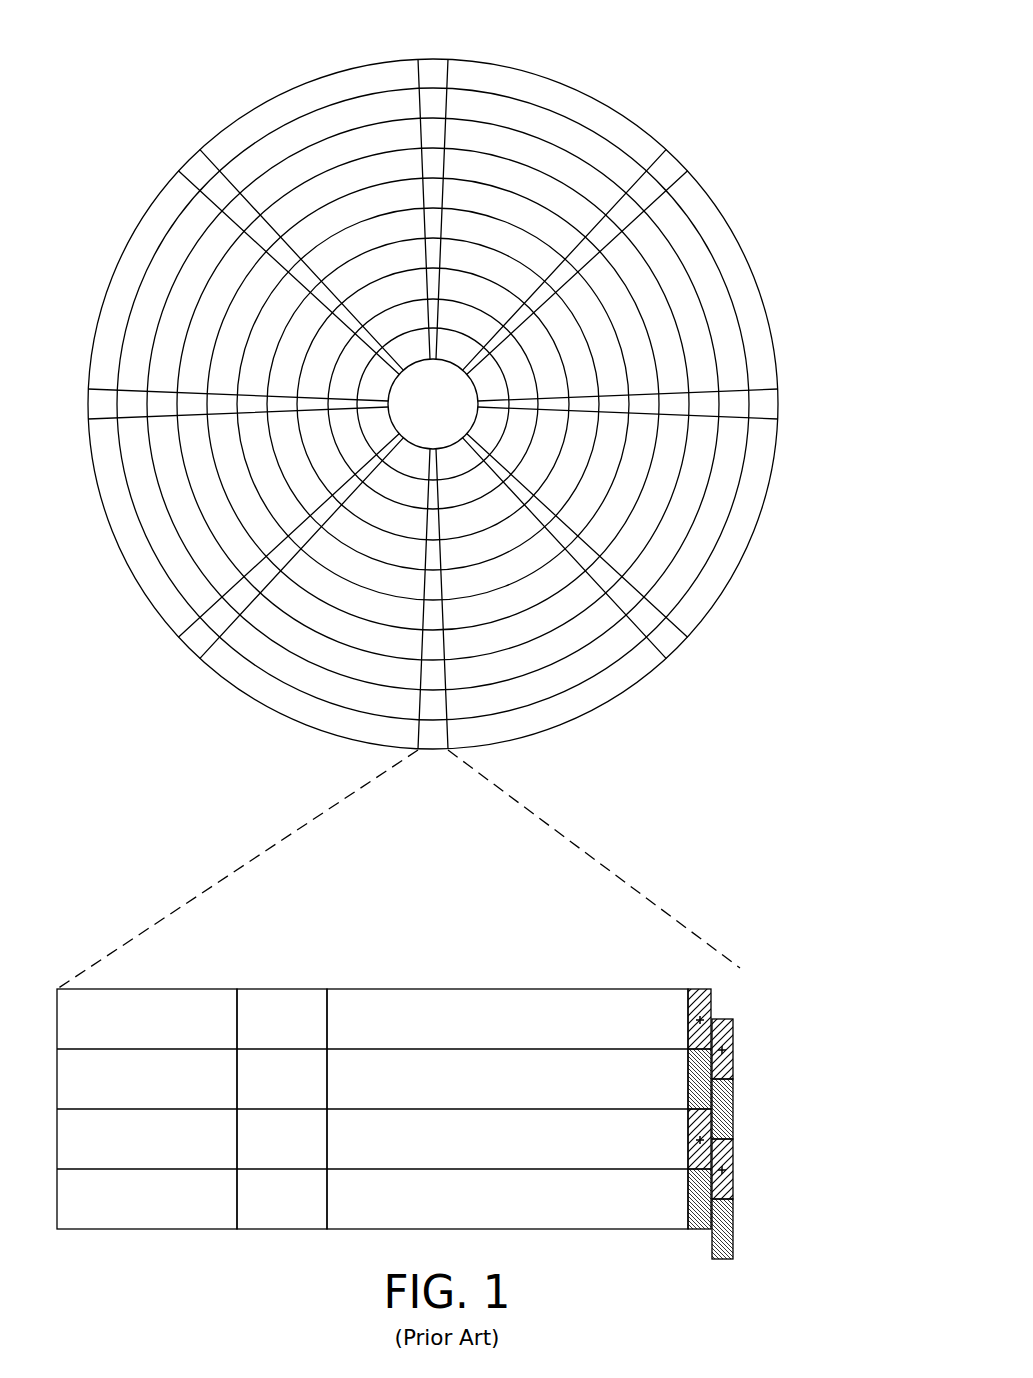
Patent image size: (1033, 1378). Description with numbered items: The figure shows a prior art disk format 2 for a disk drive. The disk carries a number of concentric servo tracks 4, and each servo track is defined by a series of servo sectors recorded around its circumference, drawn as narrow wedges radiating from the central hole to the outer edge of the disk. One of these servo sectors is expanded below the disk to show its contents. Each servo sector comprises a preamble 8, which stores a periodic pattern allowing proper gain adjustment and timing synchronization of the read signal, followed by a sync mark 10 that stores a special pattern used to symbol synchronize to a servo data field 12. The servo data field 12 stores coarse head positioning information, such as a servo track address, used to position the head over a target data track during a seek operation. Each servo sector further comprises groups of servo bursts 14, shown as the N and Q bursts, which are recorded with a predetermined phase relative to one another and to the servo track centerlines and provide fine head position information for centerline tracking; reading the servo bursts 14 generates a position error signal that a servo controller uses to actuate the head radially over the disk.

The disk format 2 is at (178, 62).
The servo tracks 4 is at (550, 130).
The preamble 8 is at (156, 988).
The sync mark 10 is at (286, 988).
The servo data field 12 is at (494, 988).
The servo bursts 14 is at (730, 985).